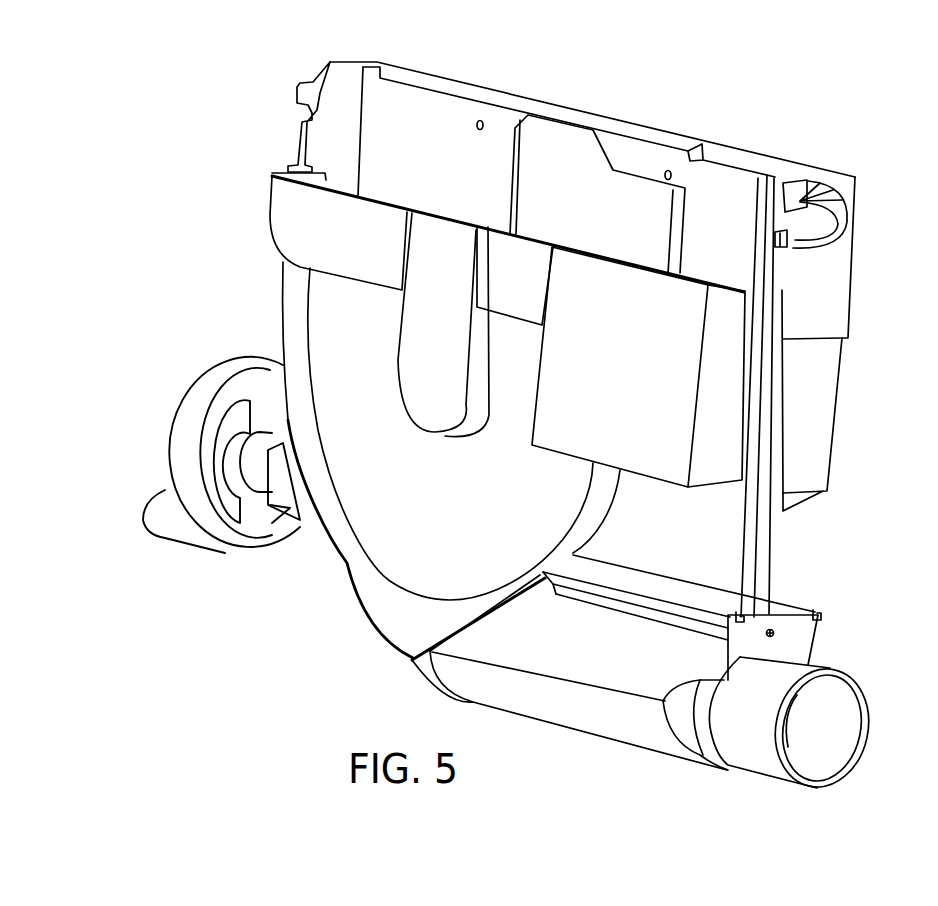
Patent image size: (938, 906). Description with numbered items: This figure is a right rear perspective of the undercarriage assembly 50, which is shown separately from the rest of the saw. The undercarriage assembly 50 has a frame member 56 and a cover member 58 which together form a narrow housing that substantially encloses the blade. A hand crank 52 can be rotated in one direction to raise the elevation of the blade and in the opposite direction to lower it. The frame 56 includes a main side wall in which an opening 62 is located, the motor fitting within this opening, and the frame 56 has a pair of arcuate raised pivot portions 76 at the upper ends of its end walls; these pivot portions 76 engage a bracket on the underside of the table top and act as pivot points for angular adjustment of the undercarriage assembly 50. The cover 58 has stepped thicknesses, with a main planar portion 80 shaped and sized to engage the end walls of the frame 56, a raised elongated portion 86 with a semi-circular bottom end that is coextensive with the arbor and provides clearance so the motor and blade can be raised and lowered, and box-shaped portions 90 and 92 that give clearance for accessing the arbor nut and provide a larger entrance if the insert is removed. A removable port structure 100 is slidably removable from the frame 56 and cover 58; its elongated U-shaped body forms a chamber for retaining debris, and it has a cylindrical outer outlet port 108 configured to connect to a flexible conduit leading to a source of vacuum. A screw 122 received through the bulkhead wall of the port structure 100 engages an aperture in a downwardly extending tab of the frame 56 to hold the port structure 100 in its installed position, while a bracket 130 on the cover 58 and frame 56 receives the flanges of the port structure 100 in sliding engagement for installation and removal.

The undercarriage assembly 50 is at (674, 84).
The hand crank 52 is at (256, 535).
The frame member 56 is at (857, 284).
The cover member 58 is at (391, 587).
The opening 62 is at (527, 147).
The arcuate raised pivot portions 76 is at (300, 84).
The main planar portion 80 is at (348, 570).
The raised elongated portion 86 is at (427, 395).
The box-shaped portion 90 is at (582, 383).
The box-shaped portion 92 is at (302, 220).
The removable port structure 100 is at (572, 755).
The cylindrical outer outlet port 108 is at (752, 740).
The screw 122 is at (773, 635).
The bracket 130 is at (822, 615).